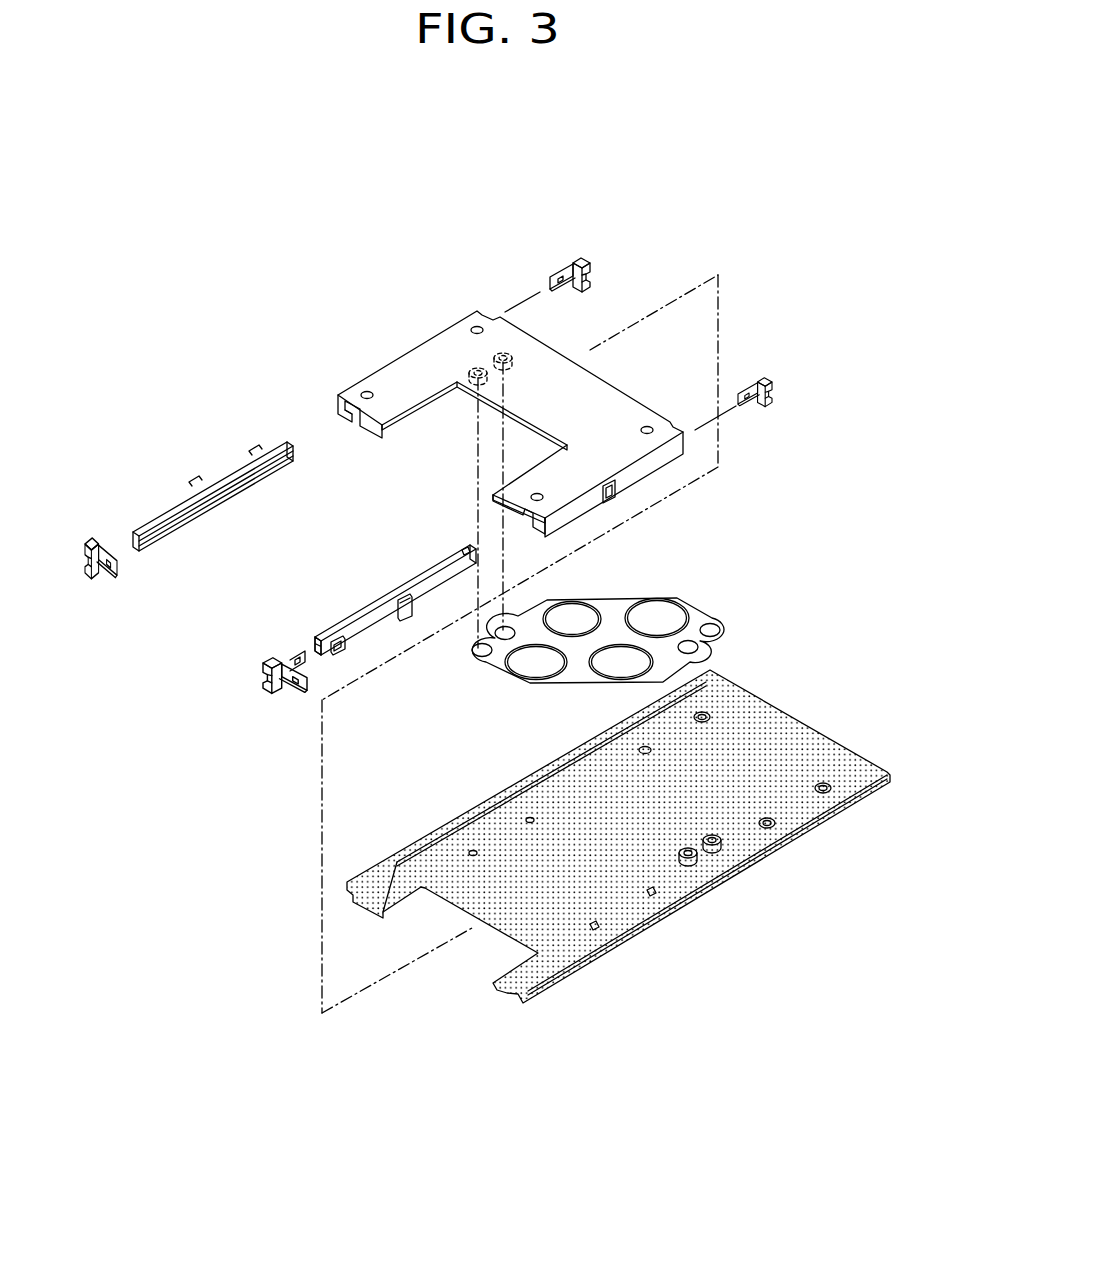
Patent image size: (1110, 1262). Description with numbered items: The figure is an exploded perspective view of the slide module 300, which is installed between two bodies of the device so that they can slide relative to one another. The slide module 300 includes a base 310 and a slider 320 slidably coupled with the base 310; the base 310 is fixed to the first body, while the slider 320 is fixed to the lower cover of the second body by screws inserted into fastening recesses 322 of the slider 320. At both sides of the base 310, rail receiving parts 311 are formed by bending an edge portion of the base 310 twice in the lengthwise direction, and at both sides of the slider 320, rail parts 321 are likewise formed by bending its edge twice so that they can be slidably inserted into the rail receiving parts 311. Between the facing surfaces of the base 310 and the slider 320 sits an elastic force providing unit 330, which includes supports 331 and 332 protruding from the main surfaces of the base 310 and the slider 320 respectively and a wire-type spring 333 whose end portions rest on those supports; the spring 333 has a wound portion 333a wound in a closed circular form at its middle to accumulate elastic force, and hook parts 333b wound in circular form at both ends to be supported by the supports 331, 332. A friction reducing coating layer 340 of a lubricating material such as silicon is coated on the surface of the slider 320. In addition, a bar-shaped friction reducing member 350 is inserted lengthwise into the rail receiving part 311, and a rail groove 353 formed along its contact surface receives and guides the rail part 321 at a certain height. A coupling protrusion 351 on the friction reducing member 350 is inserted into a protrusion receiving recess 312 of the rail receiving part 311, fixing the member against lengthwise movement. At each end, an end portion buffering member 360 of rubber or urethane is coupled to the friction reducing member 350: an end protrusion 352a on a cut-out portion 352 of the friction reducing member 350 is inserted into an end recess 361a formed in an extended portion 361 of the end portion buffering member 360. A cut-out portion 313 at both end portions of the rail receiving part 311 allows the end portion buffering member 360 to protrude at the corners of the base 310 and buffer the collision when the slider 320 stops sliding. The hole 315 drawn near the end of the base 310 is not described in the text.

The slide module 300 is at (775, 233).
The base 310 is at (407, 343).
The rail receiving part 311 is at (356, 425).
The protrusion receiving recess 312 is at (613, 500).
The cut-out portion 313 is at (336, 393).
The hole 315 is at (369, 400).
The slider 320 is at (630, 887).
The rail part 321 is at (397, 853).
The fastening recess 322 is at (780, 826).
The elastic force providing unit 330 is at (688, 609).
The support 331 is at (488, 376).
The support 332 is at (688, 845).
The spring 333 is at (678, 592).
The wound portion 333a is at (602, 606).
The hook part 333b is at (712, 624).
The friction reducing coating layer 340 is at (773, 732).
The friction reducing member 350 is at (233, 460).
The coupling protrusion 351 is at (410, 620).
The cut-out end portion 352 is at (324, 655).
The end protrusion 352a is at (343, 656).
The rail groove 353 is at (160, 538).
The end portion buffering member 360 is at (567, 262).
The extended portion 361 is at (305, 657).
The end recess 361a is at (291, 660).